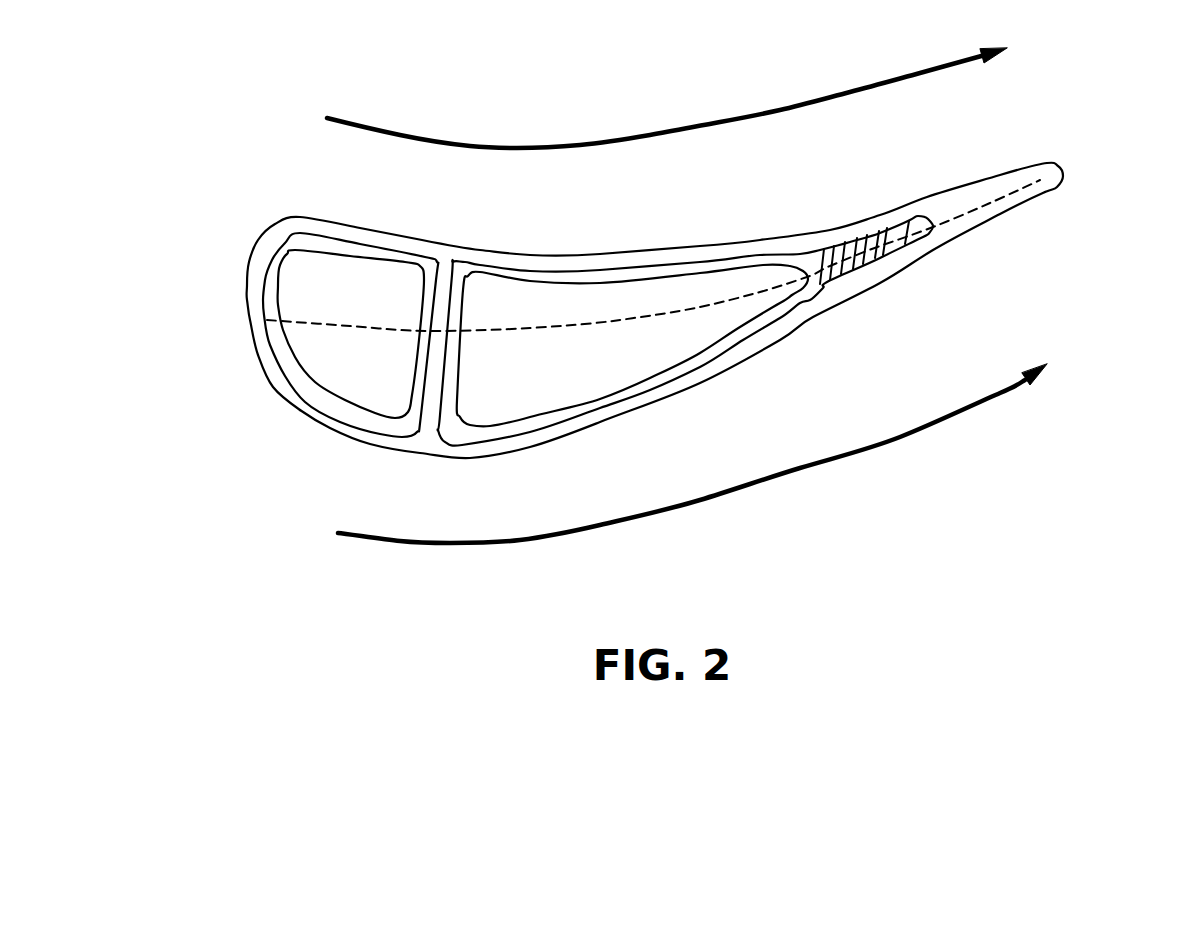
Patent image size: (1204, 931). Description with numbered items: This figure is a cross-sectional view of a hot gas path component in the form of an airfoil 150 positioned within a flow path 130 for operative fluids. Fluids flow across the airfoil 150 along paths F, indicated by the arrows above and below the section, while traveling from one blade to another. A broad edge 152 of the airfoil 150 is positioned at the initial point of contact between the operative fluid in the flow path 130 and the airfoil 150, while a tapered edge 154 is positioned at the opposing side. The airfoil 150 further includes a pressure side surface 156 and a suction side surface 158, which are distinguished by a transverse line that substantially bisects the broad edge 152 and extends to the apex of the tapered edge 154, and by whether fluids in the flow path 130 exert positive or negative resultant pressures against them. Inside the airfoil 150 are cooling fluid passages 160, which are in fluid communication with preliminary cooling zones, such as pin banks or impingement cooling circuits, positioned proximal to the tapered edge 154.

The flow path 130 is at (412, 65).
The airfoil 150 is at (649, 300).
The broad edge 152 is at (266, 240).
The tapered edge 154 is at (1062, 166).
The pressure side surface 156 is at (567, 256).
The suction side surface 158 is at (668, 398).
The cooling fluid passages 160 is at (388, 372).